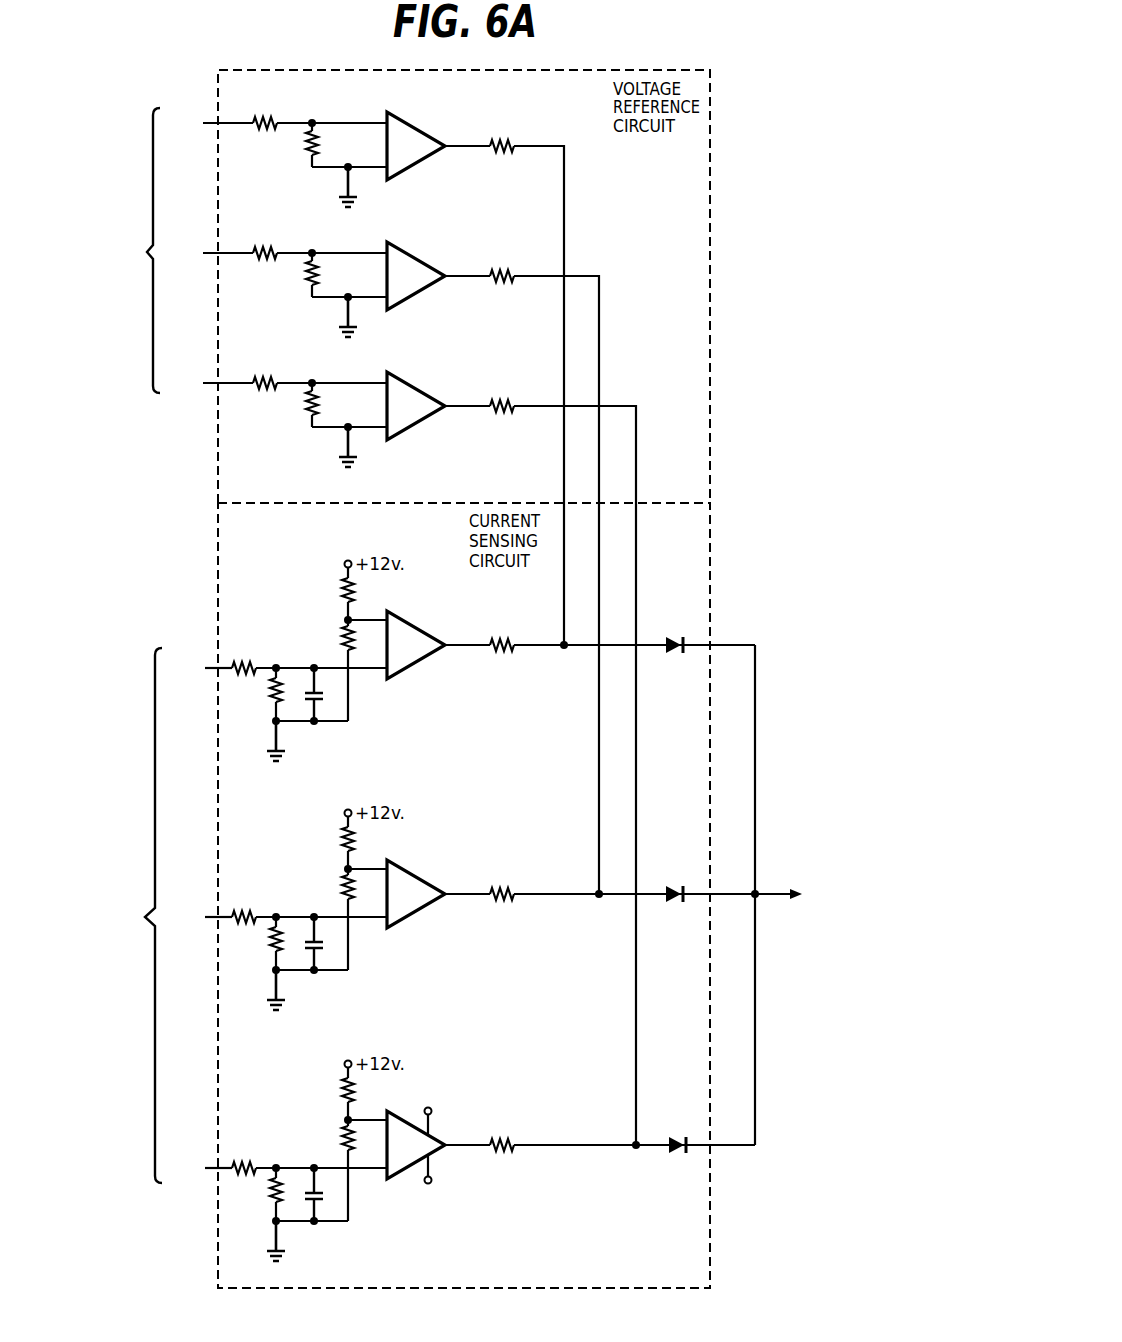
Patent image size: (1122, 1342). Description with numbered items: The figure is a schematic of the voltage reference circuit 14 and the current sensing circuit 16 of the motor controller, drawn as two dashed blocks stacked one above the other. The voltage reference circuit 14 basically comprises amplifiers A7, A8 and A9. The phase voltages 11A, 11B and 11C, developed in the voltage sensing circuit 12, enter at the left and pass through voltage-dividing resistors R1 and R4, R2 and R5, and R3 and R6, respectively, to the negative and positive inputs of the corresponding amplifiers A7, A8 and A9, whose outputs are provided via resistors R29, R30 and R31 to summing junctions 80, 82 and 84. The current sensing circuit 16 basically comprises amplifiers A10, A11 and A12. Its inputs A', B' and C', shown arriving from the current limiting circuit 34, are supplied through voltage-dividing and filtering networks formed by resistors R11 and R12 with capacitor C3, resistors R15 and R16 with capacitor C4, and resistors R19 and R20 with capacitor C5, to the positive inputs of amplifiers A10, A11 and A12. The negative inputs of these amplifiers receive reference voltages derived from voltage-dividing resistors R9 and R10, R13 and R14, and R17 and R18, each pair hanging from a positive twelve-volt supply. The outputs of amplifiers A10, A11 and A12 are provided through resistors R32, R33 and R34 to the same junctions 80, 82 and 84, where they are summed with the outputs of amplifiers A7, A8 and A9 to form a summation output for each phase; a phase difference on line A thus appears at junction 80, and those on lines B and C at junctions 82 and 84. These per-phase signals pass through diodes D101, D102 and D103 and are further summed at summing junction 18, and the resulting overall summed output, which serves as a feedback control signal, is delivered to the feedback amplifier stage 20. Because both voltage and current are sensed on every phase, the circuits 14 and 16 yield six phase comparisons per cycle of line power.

The voltage reference circuit 14 is at (710, 400).
The current sensing circuit 16 is at (710, 600).
The summing junction 18 is at (755, 893).
The voltage sensing circuit 12 is at (114, 250).
The current limiting circuit 34 is at (112, 915).
The feedback amplifier stage 20 is at (842, 899).
The summing junction 80 is at (564, 649).
The summing junction 82 is at (600, 898).
The summing junction 84 is at (636, 1149).
The phase voltage 11A is at (208, 123).
The phase voltage 11B is at (208, 253).
The phase voltage 11C is at (208, 383).
The sensing input A' is at (199, 669).
The sensing input B' is at (199, 918).
The sensing input C' is at (199, 1169).
The voltage-dividing resistor R1 is at (265, 113).
The voltage-dividing resistor R2 is at (265, 243).
The voltage-dividing resistor R3 is at (265, 373).
The voltage-dividing resistor R4 is at (325, 145).
The voltage-dividing resistor R5 is at (325, 275).
The voltage-dividing resistor R6 is at (325, 405).
The voltage-dividing resistor R9 is at (335, 591).
The voltage-dividing resistor R10 is at (330, 670).
The voltage-dividing and filtering resistor R11 is at (247, 658).
The voltage-dividing and filtering resistor R12 is at (259, 694).
The voltage-dividing resistor R13 is at (333, 840).
The voltage-dividing resistor R14 is at (330, 919).
The voltage-dividing and filtering resistor R15 is at (247, 907).
The voltage-dividing and filtering resistor R16 is at (259, 943).
The voltage-dividing resistor R17 is at (333, 1091).
The voltage-dividing resistor R18 is at (330, 1170).
The voltage-dividing and filtering resistor R19 is at (247, 1158).
The voltage-dividing and filtering resistor R20 is at (259, 1194).
The resistor R29 is at (503, 135).
The resistor R30 is at (503, 265).
The resistor R31 is at (503, 395).
The resistor R32 is at (503, 634).
The resistor R33 is at (503, 883).
The resistor R34 is at (503, 1134).
The filtering capacitor C3 is at (326, 694).
The filtering capacitor C4 is at (326, 943).
The filtering capacitor C5 is at (326, 1194).
The amplifier A7 is at (416, 146).
The amplifier A8 is at (416, 276).
The amplifier A9 is at (416, 406).
The amplifier A10 is at (416, 645).
The amplifier A11 is at (416, 894).
The amplifier A12 is at (436, 1145).
The diode D101 is at (674, 634).
The diode D102 is at (674, 883).
The diode D103 is at (677, 1134).